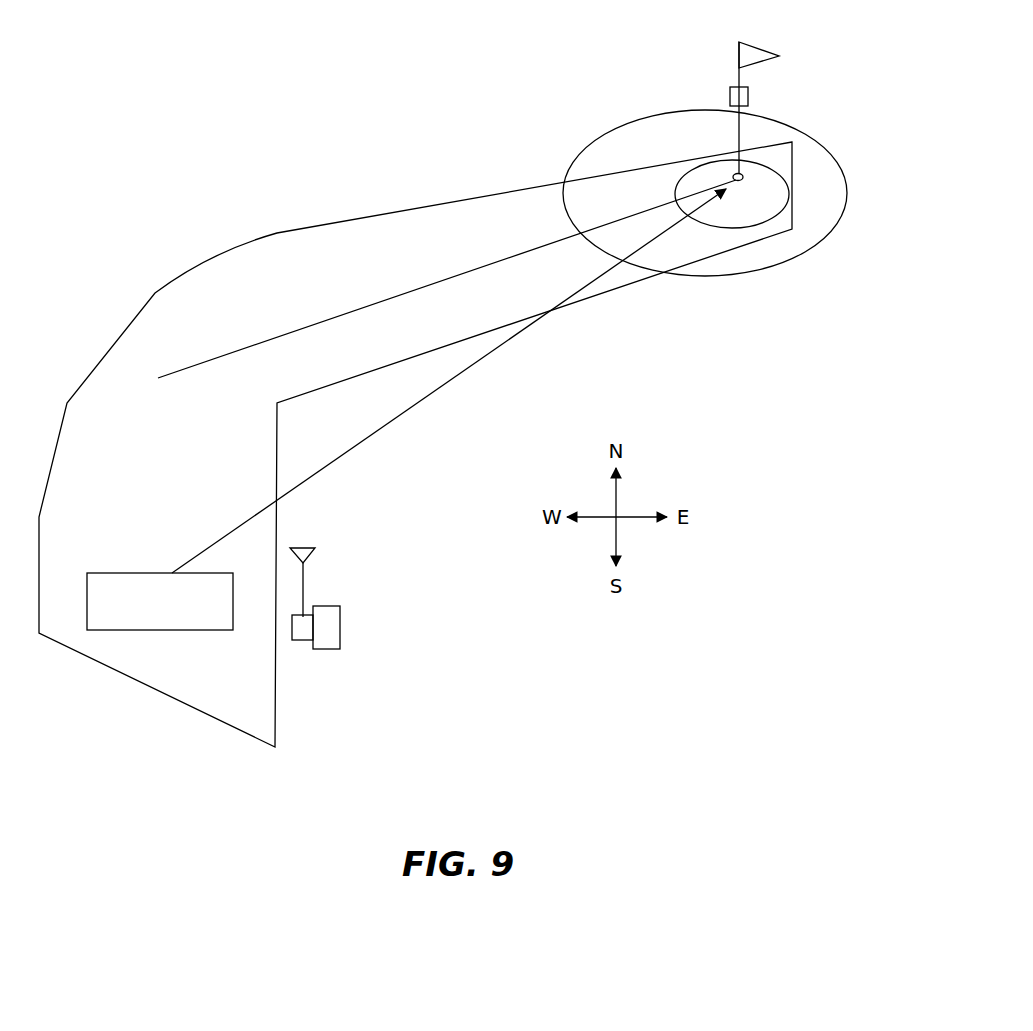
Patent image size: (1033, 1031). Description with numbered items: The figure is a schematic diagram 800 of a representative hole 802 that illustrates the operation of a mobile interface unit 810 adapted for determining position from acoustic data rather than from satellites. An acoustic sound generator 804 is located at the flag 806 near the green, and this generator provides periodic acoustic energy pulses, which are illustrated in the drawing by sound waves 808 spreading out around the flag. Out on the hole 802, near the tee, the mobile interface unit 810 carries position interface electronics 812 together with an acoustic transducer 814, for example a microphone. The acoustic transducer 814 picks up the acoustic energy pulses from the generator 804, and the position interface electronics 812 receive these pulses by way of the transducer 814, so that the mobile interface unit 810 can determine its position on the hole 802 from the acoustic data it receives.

The schematic diagram 800 is at (178, 159).
The representative hole 802 is at (147, 484).
The acoustic sound generator 804 is at (748, 98).
The flag 806 is at (740, 50).
The sound waves 808 is at (842, 170).
The mobile interface unit 810 is at (340, 639).
The position interface electronics 812 is at (303, 640).
The acoustic transducer 814 is at (308, 547).